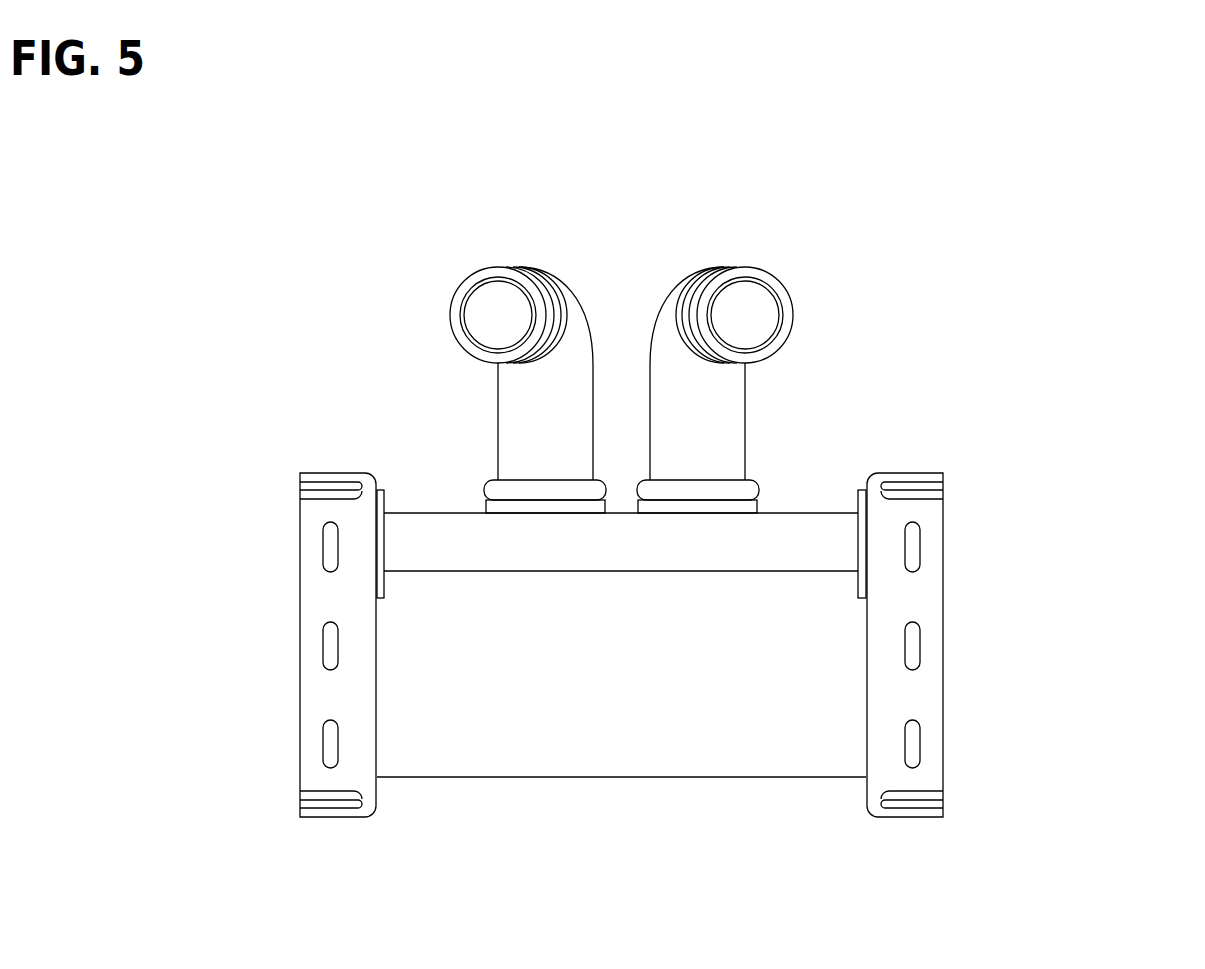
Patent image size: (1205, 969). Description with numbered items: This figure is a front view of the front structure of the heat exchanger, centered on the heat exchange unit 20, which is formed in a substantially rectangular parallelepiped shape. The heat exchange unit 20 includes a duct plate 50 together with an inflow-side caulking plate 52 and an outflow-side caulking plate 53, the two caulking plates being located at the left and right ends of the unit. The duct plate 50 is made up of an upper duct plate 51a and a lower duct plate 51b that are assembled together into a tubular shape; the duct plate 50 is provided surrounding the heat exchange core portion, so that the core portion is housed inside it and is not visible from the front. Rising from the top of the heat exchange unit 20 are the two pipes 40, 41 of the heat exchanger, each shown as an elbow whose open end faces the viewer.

The heat exchange unit 20 is at (1070, 363).
The pipe 40 is at (728, 265).
The pipe 41 is at (523, 265).
The duct plate 50 is at (797, 509).
The upper duct plate 51a is at (829, 512).
The lower duct plate 51b is at (797, 777).
The inflow-side caulking plate 52 is at (313, 472).
The outflow-side caulking plate 53 is at (932, 468).